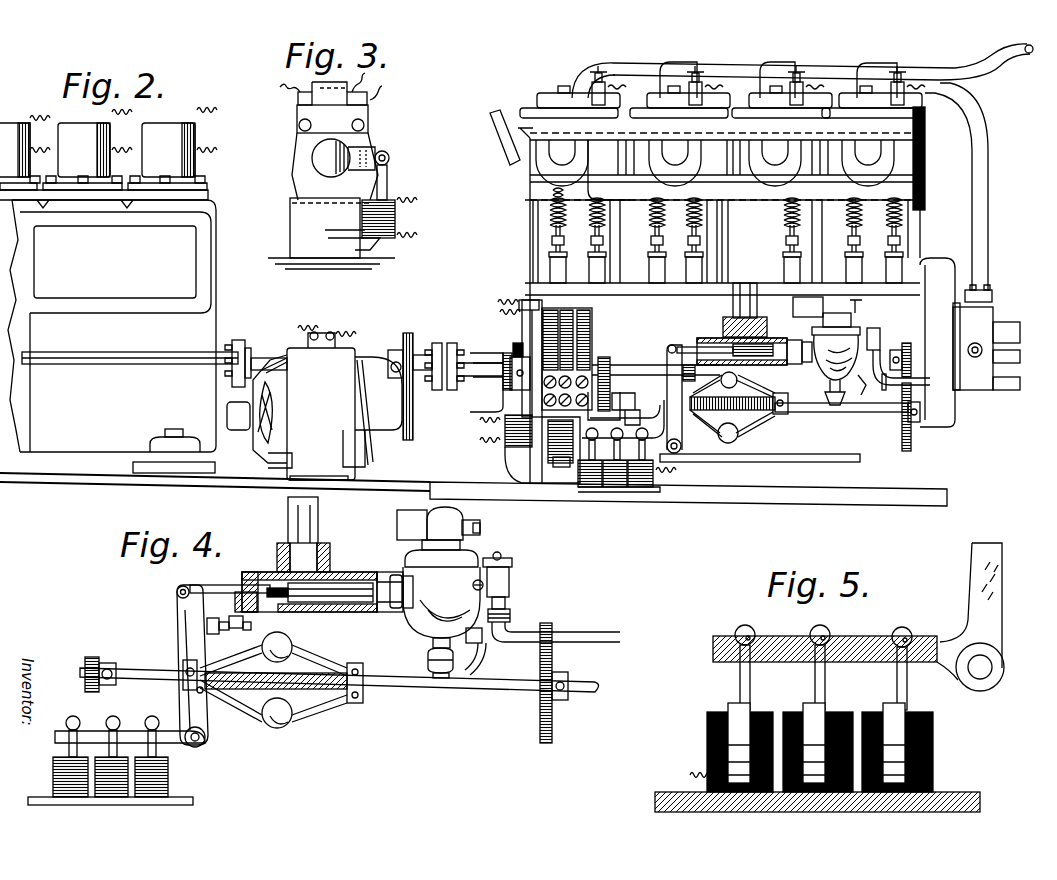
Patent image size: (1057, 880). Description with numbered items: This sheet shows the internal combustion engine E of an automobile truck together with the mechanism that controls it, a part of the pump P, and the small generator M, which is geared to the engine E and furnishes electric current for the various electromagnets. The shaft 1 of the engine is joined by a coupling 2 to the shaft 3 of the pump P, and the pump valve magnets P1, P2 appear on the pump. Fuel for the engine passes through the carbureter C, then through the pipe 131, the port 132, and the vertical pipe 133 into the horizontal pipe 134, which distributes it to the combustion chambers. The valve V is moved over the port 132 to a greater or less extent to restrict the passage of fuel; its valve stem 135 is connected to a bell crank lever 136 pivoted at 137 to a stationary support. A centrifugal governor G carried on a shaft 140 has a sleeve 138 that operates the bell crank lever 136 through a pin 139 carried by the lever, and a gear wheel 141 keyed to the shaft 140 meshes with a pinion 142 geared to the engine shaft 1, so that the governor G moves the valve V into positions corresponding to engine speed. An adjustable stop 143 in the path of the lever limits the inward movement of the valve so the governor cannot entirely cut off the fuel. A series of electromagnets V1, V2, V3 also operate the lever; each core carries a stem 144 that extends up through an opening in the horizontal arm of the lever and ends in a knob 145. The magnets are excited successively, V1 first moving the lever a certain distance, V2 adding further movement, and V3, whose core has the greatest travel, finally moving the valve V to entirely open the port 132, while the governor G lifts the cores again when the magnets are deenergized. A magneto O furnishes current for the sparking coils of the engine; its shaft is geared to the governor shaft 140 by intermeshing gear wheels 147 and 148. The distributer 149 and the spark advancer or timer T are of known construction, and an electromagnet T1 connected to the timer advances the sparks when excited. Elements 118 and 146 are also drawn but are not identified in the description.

In FIG. 2, the pump P is at (125, 324).
In FIG. 2, the pump valve magnet P1 is at (170, 137).
In FIG. 2, the pump valve magnet P2 is at (83, 137).
In FIG. 2, the generator M is at (305, 352).
In FIG. 2, the pump shaft 3 is at (417, 375).
In FIG. 2, the coupling 2 is at (464, 348).
In FIG. 2, the timer electromagnet T1 is at (512, 350).
In FIG. 3, the timer electromagnet T1 is at (398, 223).
In FIG. 2, the distributer 149 is at (528, 325).
In FIG. 3, the distributer 149 is at (345, 112).
In FIG. 2, the magneto gear wheel 147 is at (603, 357).
In FIG. 2, the bracket 118 is at (610, 387).
In FIG. 2, the valve electromagnet V1 is at (585, 487).
In FIG. 4, the valve electromagnet V1 is at (60, 778).
In FIG. 5, the valve electromagnet V1 is at (700, 712).
In FIG. 2, the valve electromagnet V2 is at (612, 487).
In FIG. 4, the valve electromagnet V2 is at (106, 752).
In FIG. 5, the valve electromagnet V2 is at (795, 712).
In FIG. 2, the valve electromagnet V3 is at (636, 487).
In FIG. 4, the valve electromagnet V3 is at (150, 752).
In FIG. 5, the valve electromagnet V3 is at (878, 712).
In FIG. 2, the internal combustion engine E is at (537, 100).
In FIG. 2, the horizontal pipe 134 is at (903, 200).
In FIG. 2, the vertical pipe 133 is at (747, 297).
In FIG. 4, the vertical pipe 133 is at (312, 514).
In FIG. 2, the valve V is at (720, 337).
In FIG. 4, the valve V is at (278, 572).
In FIG. 2, the carbureter C is at (848, 352).
In FIG. 4, the carbureter C is at (458, 585).
In FIG. 2, the pinion 142 is at (903, 343).
In FIG. 2, the engine shaft 1 is at (1010, 390).
In FIG. 2, the gear wheel 141 is at (912, 440).
In FIG. 4, the gear wheel 141 is at (553, 735).
In FIG. 2, the centrifugal governor G is at (737, 399).
In FIG. 4, the centrifugal governor G is at (322, 705).
In FIG. 2, the governor shaft 140 is at (833, 413).
In FIG. 4, the governor shaft 140 is at (418, 690).
In FIG. 3, the magneto O is at (375, 118).
In FIG. 3, the timer T is at (330, 160).
In FIG. 4, the valve stem 135 is at (222, 580).
In FIG. 4, the pipe 131 is at (345, 592).
In FIG. 4, the bell crank lever 136 is at (182, 611).
In FIG. 5, the bell crank lever 136 is at (988, 621).
In FIG. 4, the governor shaft gear wheel 148 is at (92, 655).
In FIG. 4, the adjustable stop 143 is at (250, 626).
In FIG. 4, the sleeve 138 is at (185, 672).
In FIG. 4, the port 132 is at (303, 577).
In FIG. 4, the knob 145 is at (70, 718).
In FIG. 5, the knob 145 is at (905, 628).
In FIG. 4, the stem 144 is at (70, 745).
In FIG. 5, the stem 144 is at (808, 680).
In FIG. 4, the pin 139 is at (207, 700).
In FIG. 4, the spring 146 is at (300, 700).
In FIG. 4, the pivot 137 is at (201, 747).
In FIG. 5, the pivot 137 is at (982, 679).